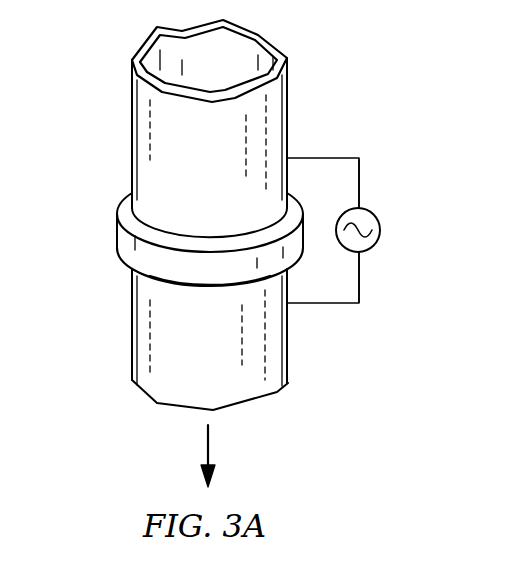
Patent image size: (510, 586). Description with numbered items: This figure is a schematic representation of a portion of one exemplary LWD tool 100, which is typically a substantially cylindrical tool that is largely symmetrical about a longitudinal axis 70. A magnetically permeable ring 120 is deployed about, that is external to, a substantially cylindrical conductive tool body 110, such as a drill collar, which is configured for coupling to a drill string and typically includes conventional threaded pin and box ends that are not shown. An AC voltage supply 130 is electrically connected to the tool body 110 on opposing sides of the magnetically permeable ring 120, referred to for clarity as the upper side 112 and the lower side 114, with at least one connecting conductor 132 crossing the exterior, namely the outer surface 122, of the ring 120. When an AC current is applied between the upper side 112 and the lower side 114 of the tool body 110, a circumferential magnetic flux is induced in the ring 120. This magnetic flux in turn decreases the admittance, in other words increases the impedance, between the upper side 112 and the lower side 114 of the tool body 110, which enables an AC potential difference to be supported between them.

The LWD tool 100 is at (399, 151).
The conductive tool body 110 is at (132, 325).
The upper side 112 is at (132, 122).
The lower side 114 is at (288, 340).
The magnetically permeable ring 120 is at (117, 238).
The outer surface 122 is at (193, 271).
The AC voltage supply 130 is at (380, 229).
The connecting conductor 132 is at (359, 277).
The longitudinal axis 70 is at (210, 445).